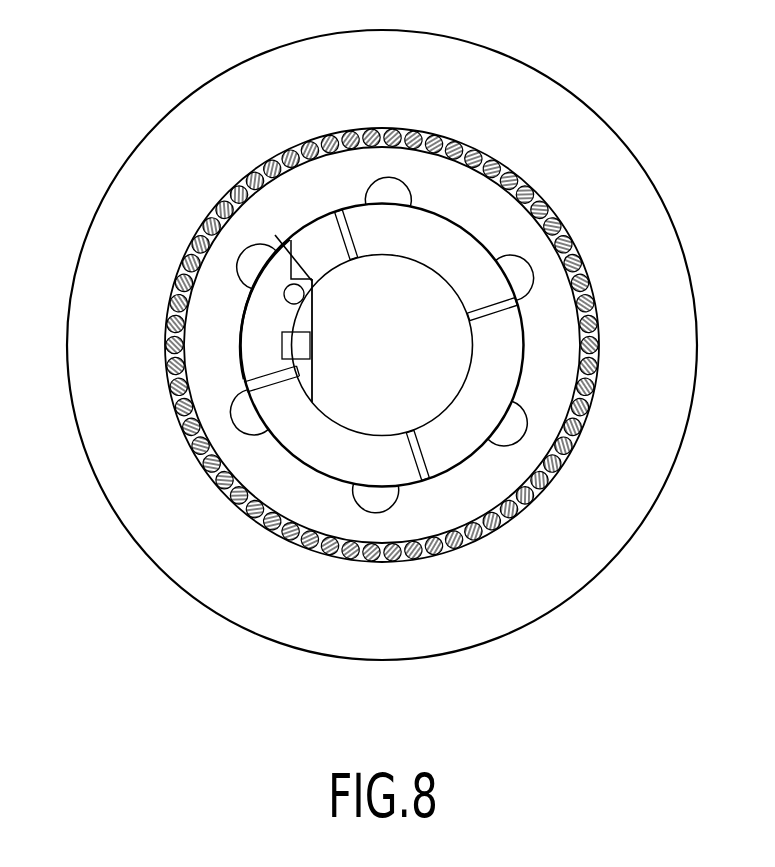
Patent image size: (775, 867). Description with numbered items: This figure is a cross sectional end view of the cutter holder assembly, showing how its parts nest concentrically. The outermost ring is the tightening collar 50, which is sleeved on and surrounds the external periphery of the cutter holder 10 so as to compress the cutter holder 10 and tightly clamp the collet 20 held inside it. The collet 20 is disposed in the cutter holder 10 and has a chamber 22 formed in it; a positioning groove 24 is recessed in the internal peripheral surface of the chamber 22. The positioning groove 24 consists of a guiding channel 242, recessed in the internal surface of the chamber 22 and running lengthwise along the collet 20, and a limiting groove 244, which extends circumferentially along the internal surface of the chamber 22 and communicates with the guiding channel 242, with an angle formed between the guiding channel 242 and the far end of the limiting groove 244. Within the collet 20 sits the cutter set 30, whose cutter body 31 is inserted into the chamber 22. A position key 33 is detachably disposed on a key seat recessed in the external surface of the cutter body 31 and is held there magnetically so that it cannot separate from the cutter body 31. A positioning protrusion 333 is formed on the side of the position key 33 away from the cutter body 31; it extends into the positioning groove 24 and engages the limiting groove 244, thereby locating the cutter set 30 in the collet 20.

The cutter holder 10 is at (549, 368).
The collet 20 is at (499, 283).
The chamber 22 is at (418, 232).
The positioning groove 24 is at (249, 344).
The guiding channel 242 is at (285, 293).
The limiting groove 244 is at (275, 235).
The cutter set 30 is at (360, 411).
The cutter body 31 is at (420, 400).
The position key 33 is at (298, 378).
The positioning protrusion 333 is at (300, 345).
The tightening collar 50 is at (553, 100).